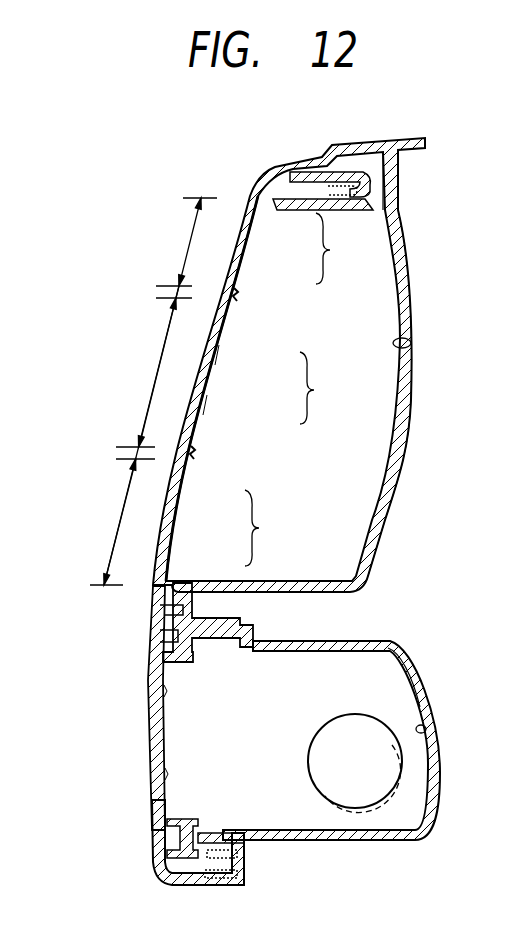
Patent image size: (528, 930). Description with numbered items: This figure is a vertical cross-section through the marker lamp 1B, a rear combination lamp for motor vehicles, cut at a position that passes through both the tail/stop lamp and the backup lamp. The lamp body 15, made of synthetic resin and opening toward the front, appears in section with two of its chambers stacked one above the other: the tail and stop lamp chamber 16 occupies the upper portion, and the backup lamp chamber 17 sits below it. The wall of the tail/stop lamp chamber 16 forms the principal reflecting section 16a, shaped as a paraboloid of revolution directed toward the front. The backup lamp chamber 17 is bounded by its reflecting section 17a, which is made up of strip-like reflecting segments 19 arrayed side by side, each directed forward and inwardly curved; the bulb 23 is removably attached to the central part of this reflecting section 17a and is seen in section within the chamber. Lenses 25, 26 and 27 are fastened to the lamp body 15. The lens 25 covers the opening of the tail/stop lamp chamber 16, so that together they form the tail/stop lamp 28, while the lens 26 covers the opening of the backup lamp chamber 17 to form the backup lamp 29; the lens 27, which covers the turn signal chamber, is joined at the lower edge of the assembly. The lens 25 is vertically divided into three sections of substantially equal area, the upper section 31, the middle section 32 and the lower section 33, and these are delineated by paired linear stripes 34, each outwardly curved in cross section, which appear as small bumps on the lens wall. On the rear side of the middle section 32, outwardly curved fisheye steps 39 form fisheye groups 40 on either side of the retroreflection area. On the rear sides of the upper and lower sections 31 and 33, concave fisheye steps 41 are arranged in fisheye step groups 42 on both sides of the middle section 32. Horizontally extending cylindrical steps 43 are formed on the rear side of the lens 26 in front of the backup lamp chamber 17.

The marker lamp 1B is at (435, 122).
The lamp body 15 is at (408, 455).
The tail and stop lamp chamber 16 is at (390, 530).
The principal reflecting section 16a is at (410, 343).
The backup lamp chamber 17 is at (425, 678).
The reflecting section 17a is at (426, 732).
The reflecting segments 19 is at (406, 698).
The bulb 23 is at (398, 800).
The lens 25 is at (250, 200).
The lens 26 is at (150, 752).
The lens 27 is at (158, 861).
The tail/stop lamp 28 is at (368, 328).
The backup lamp 29 is at (303, 700).
The upper section 31 is at (180, 250).
The middle section 32 is at (154, 366).
The lower section 33 is at (118, 508).
The linear stripes 34 is at (238, 292).
The fisheye steps 39 is at (219, 350).
The fisheye groups 40 is at (323, 388).
The concave fisheye steps 41 is at (243, 218).
The fisheye step groups 42 is at (302, 389).
The cylindrical steps 43 is at (164, 689).